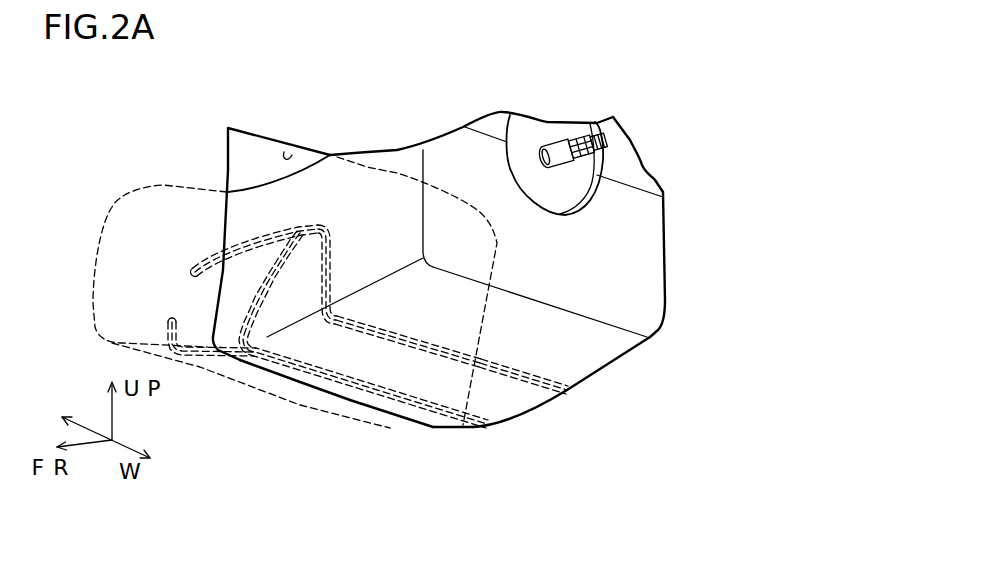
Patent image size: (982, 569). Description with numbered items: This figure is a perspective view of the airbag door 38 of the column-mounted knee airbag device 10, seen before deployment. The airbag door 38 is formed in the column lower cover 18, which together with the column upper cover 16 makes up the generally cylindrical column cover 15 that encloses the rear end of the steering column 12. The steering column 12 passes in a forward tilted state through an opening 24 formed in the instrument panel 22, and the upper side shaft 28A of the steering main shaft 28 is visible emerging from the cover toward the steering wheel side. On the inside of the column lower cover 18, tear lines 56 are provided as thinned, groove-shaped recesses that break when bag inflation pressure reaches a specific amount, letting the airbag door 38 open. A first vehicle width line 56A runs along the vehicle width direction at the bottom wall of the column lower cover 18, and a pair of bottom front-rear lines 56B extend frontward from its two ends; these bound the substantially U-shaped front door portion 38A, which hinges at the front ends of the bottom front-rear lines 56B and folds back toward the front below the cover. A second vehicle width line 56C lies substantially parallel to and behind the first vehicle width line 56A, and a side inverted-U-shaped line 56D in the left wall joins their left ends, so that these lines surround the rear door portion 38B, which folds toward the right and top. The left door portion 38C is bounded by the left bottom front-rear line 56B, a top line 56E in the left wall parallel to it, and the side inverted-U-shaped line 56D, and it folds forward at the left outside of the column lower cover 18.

The column-mounted knee airbag device 10 is at (363, 467).
The steering column 12 is at (692, 112).
The column cover 15 is at (677, 225).
The column upper cover 16 is at (638, 176).
The column lower cover 18 is at (610, 355).
The instrument panel 22 is at (275, 118).
The opening 24 is at (292, 155).
The steering main shaft 28 is at (554, 165).
The upper side shaft 28A is at (548, 140).
The airbag door 38 is at (347, 415).
The front door portion 38A is at (327, 383).
The rear door portion 38B is at (410, 383).
The left door portion 38C is at (213, 345).
The tear lines 56 is at (418, 335).
The first vehicle width line 56A is at (433, 427).
The bottom front-rear lines 56B is at (241, 355).
The second vehicle width line 56C is at (513, 383).
The side inverted-U-shaped line 56D is at (333, 267).
The top line 56E is at (267, 230).